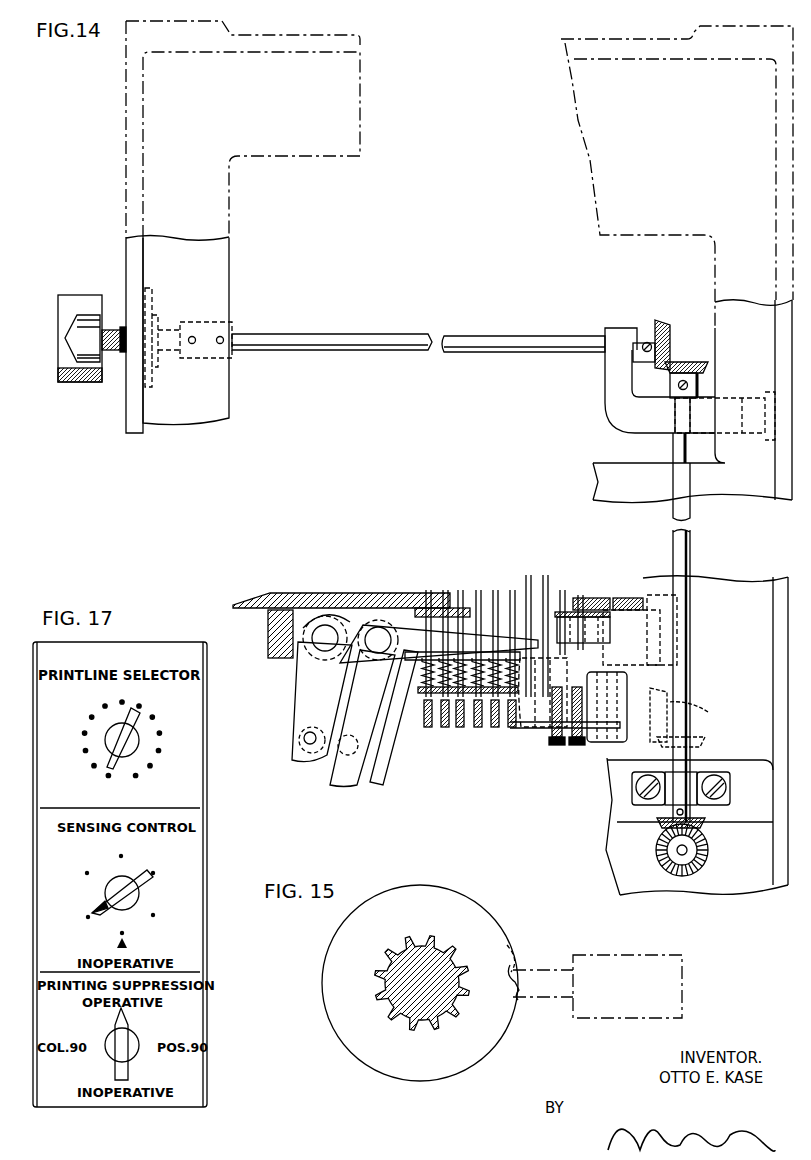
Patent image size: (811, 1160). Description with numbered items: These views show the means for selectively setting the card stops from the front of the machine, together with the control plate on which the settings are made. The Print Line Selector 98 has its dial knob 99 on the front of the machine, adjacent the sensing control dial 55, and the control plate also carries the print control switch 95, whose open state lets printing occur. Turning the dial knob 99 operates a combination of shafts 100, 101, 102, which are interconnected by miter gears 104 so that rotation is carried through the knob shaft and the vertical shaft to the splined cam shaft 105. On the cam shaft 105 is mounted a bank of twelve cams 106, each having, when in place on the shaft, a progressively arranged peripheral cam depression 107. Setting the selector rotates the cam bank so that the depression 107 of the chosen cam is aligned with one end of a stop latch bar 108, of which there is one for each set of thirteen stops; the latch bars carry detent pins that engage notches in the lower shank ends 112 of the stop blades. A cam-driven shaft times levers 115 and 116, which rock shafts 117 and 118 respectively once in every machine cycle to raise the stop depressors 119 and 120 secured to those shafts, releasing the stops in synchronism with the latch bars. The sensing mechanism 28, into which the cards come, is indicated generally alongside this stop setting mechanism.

In FIG. 14, the dial knob 99 is at (82, 300).
In FIG. 14, the shaft 100 is at (408, 334).
In FIG. 14, the shaft 101 is at (674, 548).
In FIG. 14, the shaft 102 is at (678, 853).
In FIG. 14, the miter gears 104 is at (726, 851).
In FIG. 14, the splined cam shaft 105 is at (545, 730).
In FIG. 15, the splined cam shaft 105 is at (393, 1015).
In FIG. 14, the cams 106 is at (577, 745).
In FIG. 15, the cams 106 is at (487, 1043).
In FIG. 15, the peripheral cam depressions 107 is at (513, 968).
In FIG. 14, the stop latch bar 108 is at (495, 728).
In FIG. 15, the stop latch bar 108 is at (613, 955).
In FIG. 14, the lower shank ends 112 is at (422, 677).
In FIG. 14, the lever 115 is at (380, 718).
In FIG. 14, the lever 116 is at (300, 712).
In FIG. 14, the shaft 117 is at (377, 655).
In FIG. 14, the shaft 118 is at (323, 642).
In FIG. 14, the stop depressor 119 is at (486, 620).
In FIG. 14, the stop depressor 120 is at (397, 593).
In FIG. 14, the sensing mechanism 28 is at (415, 787).
In FIG. 17, the Print Line Selector 98 is at (177, 717).
In FIG. 17, the sensing control dial 55 is at (172, 885).
In FIG. 17, the print control switch 95 is at (155, 1032).